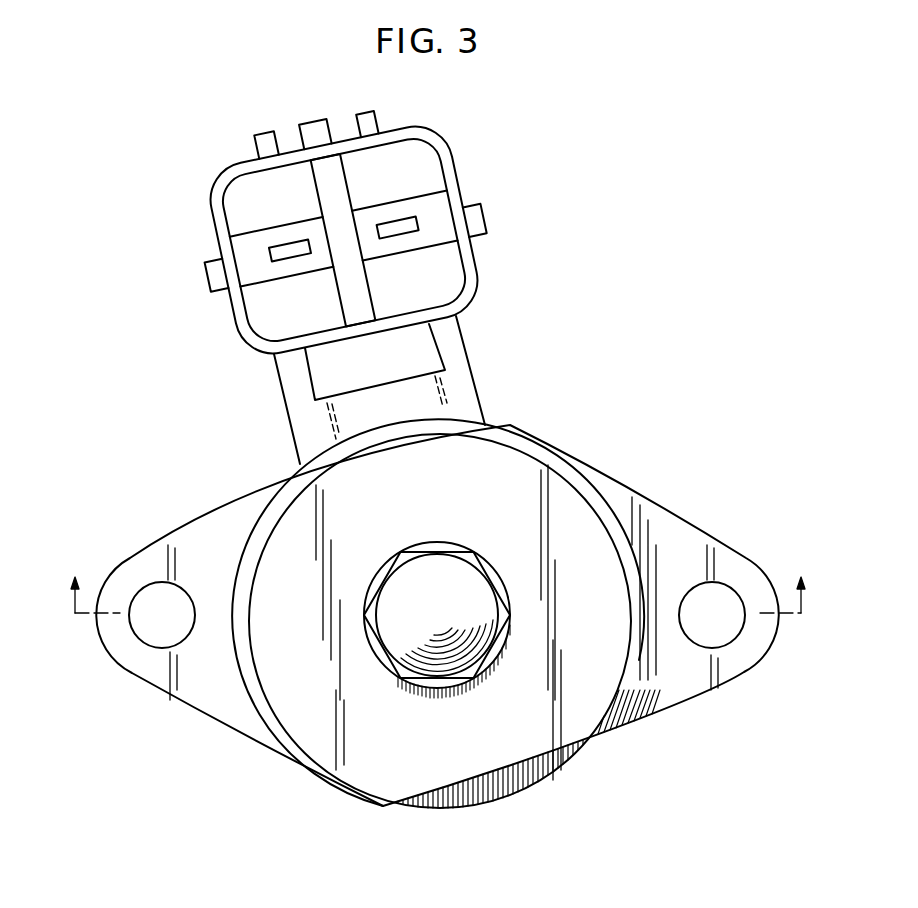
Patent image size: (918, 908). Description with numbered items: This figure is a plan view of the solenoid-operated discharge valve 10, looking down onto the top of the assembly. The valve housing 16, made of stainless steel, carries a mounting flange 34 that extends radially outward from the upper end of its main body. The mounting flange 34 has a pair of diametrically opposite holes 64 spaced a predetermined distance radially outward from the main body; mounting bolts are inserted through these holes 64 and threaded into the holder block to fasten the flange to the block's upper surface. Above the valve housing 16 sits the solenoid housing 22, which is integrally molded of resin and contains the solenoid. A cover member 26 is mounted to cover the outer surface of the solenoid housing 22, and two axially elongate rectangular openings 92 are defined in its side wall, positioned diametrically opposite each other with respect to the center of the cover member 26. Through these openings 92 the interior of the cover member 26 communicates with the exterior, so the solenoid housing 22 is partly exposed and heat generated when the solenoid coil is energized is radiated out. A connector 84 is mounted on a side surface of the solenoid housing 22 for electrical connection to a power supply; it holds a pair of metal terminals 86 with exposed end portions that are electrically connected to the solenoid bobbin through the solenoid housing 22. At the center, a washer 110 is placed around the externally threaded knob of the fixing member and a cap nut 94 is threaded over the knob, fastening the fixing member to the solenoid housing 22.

The discharge valve 10 is at (660, 262).
The valve housing 16 is at (642, 499).
The solenoid housing 22 is at (514, 788).
The cover member 26 is at (363, 772).
The mounting flange 34 is at (138, 563).
The holes 64 is at (150, 628).
The connector 84 is at (441, 160).
The terminals 86 is at (382, 228).
The openings 92 is at (462, 427).
The cap nut 94 is at (445, 562).
The washer 110 is at (380, 652).